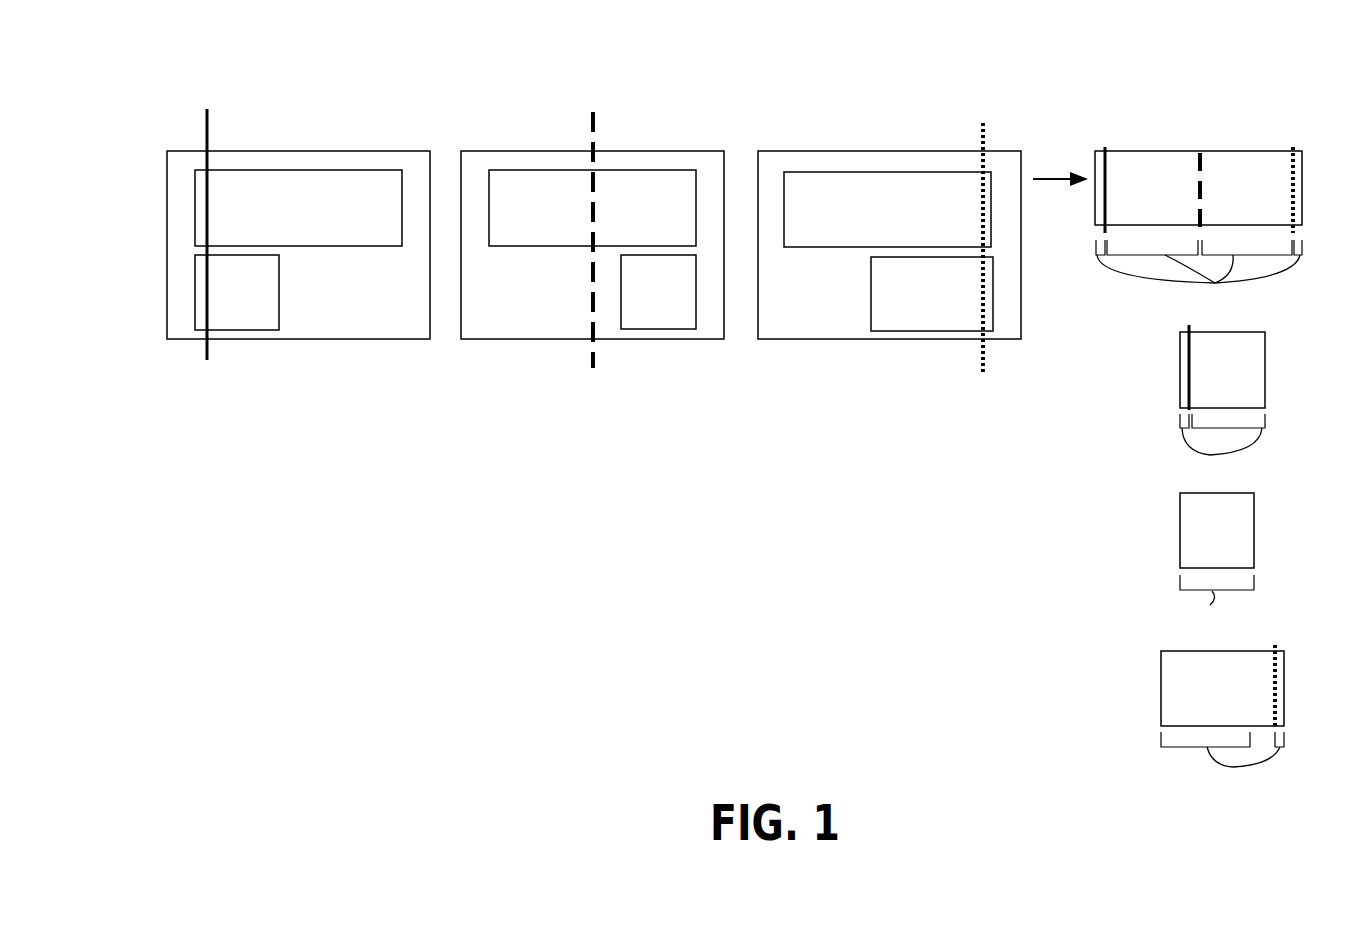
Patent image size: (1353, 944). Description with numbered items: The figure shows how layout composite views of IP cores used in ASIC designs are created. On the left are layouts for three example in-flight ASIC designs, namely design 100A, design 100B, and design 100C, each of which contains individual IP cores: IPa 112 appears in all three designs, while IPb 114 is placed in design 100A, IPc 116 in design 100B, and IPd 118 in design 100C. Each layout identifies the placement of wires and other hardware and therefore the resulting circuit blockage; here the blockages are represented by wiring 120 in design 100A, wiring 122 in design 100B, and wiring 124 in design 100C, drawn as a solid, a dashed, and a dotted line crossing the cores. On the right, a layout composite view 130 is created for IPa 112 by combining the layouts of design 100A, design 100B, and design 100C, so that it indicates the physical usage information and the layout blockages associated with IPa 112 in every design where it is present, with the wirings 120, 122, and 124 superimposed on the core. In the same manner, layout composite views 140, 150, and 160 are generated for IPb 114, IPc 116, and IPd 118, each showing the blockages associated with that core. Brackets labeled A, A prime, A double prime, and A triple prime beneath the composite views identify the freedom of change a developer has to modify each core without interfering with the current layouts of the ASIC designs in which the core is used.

The design 100A is at (305, 340).
The design 100B is at (583, 342).
The design 100C is at (882, 342).
The IPa 112 is at (390, 240).
The IPb 114 is at (252, 324).
The IPc 116 is at (672, 324).
The IPd 118 is at (913, 328).
The wiring 120 is at (207, 127).
The wiring 122 is at (593, 130).
The wiring 124 is at (983, 138).
The layout composite view 130 is at (1124, 130).
The layout composite view 140 is at (1150, 399).
The layout composite view 150 is at (1162, 528).
The layout composite view 160 is at (1133, 694).